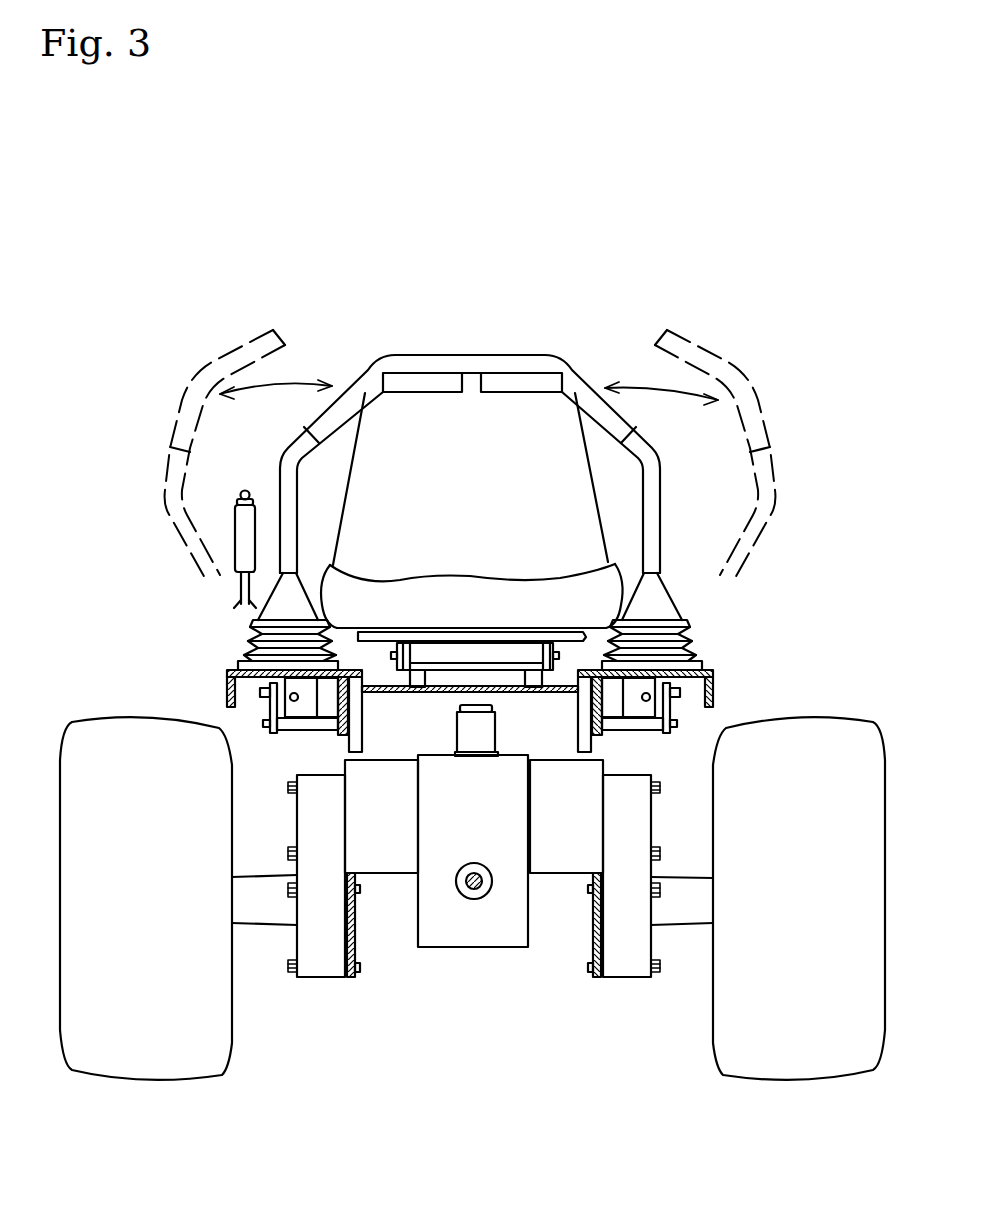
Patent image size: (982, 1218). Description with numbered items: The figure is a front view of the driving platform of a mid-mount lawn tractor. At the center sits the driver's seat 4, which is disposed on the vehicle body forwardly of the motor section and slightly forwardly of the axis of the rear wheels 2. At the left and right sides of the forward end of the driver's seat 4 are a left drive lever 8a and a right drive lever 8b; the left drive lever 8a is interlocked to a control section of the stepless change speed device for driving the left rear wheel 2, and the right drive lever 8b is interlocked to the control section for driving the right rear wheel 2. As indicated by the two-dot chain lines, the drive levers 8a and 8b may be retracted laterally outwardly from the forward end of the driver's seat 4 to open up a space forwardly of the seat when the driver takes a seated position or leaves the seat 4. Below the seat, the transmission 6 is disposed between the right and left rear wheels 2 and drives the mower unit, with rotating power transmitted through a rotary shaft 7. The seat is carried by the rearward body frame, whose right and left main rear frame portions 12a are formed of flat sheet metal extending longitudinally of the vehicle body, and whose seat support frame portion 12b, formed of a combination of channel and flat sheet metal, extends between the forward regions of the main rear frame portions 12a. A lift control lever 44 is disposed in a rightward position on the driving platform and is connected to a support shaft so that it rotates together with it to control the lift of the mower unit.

The rear wheels 2 is at (93, 717).
The driver's seat 4 is at (470, 355).
The transmission 6 is at (453, 941).
The rotary shaft 7 is at (480, 889).
The left drive lever 8a is at (515, 380).
The right drive lever 8b is at (408, 380).
The main rear frame portions 12a is at (356, 978).
The seat support frame portion 12b is at (422, 693).
The lift control lever 44 is at (240, 530).